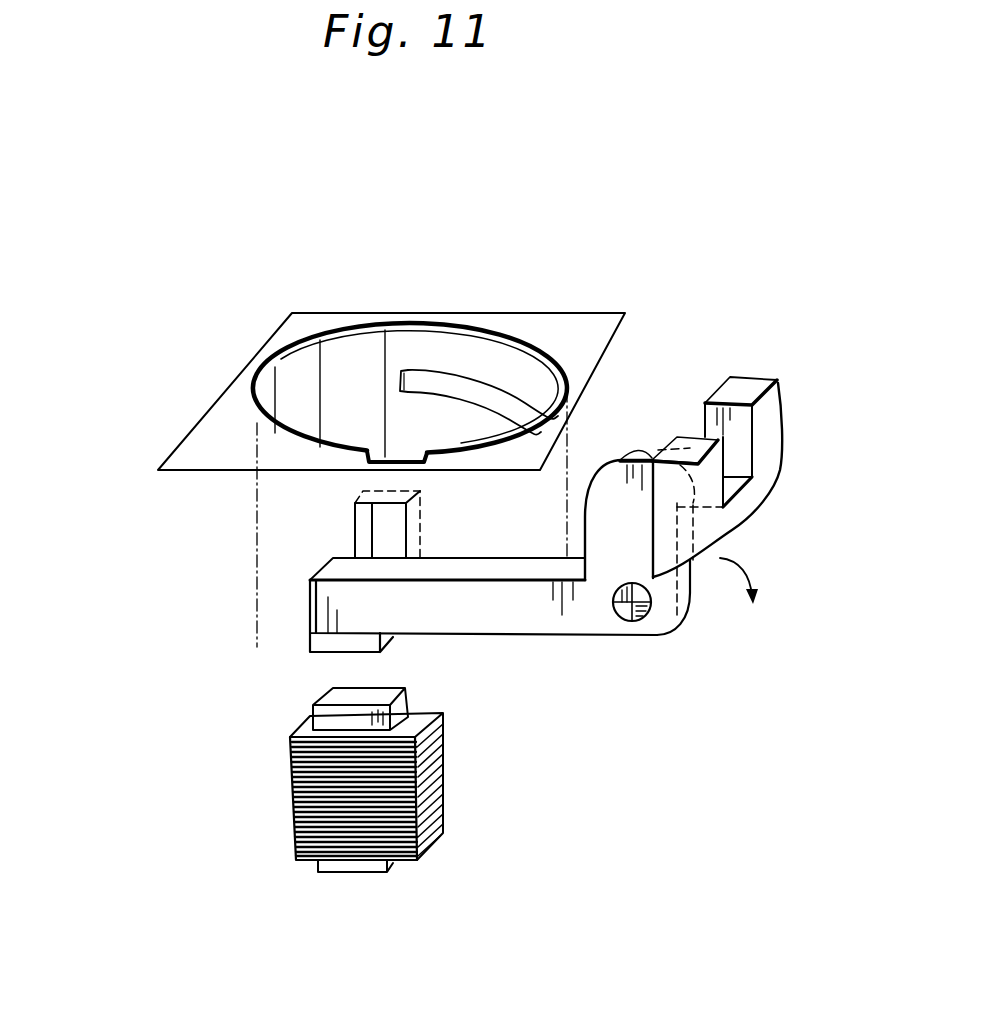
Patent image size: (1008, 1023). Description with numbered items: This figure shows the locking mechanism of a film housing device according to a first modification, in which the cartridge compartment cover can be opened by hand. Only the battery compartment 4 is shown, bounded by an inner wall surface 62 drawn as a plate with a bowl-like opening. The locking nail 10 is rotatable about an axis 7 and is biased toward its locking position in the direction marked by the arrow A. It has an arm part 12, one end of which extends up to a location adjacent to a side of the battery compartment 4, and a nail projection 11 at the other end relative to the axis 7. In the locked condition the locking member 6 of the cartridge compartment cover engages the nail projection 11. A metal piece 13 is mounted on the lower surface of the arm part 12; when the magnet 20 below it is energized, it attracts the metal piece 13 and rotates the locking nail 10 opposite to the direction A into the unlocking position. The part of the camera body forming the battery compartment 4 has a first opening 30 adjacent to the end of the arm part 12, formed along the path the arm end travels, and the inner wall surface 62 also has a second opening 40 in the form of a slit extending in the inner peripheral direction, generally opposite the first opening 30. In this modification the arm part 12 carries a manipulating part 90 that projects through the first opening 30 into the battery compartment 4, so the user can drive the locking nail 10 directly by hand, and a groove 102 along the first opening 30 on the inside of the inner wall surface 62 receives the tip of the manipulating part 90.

The battery compartment 4 is at (364, 360).
The groove 102 is at (403, 455).
The second opening 40 is at (493, 390).
The nail projection 11 is at (623, 460).
The inner wall surface 62 is at (263, 372).
The locking member 6 is at (772, 446).
The first opening 30 is at (383, 523).
The manipulating part 90 is at (388, 552).
The locking direction A is at (756, 573).
The axis 7 is at (640, 623).
The arm part 12 is at (457, 612).
The metal piece 13 is at (322, 648).
The locking nail 10 is at (551, 660).
The magnet 20 is at (357, 865).